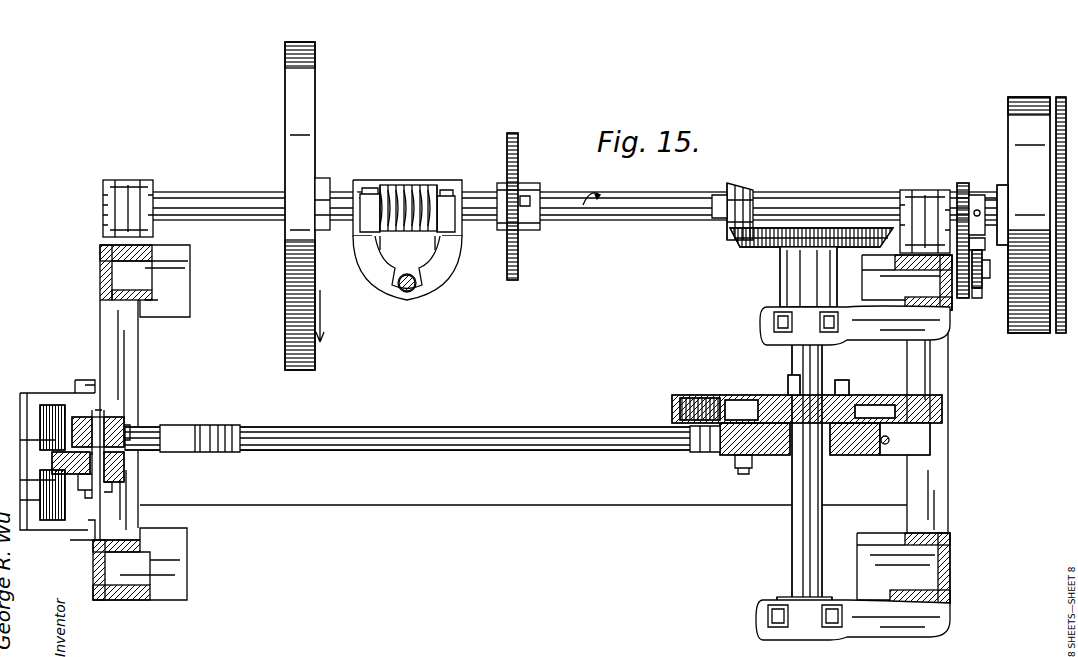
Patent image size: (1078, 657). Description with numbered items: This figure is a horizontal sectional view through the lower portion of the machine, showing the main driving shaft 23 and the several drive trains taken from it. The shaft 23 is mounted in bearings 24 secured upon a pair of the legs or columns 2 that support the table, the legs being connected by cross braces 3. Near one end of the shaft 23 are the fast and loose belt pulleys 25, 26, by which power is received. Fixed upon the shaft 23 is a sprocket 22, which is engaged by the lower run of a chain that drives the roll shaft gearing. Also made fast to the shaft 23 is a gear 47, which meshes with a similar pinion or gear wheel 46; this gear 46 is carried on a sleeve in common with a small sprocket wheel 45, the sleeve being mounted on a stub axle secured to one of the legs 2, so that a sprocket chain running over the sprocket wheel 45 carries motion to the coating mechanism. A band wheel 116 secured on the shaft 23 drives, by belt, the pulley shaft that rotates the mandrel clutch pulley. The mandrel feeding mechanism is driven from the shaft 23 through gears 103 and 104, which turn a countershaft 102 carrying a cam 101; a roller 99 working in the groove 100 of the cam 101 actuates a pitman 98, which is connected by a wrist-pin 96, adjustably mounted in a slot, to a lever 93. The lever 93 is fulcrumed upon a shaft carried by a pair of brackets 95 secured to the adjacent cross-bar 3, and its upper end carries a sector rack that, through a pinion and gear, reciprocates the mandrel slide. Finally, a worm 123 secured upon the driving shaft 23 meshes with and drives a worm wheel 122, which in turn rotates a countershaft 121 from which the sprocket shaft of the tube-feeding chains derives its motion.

The legs or columns 2 is at (98, 266).
The cross braces 3 is at (140, 337).
The sprocket 22 is at (519, 246).
The main driving shaft 23 is at (641, 214).
The bearings 24 is at (138, 182).
The fast belt pulley 25 is at (1020, 123).
The loose belt pulley 26 is at (1064, 128).
The small sprocket wheel 45 is at (982, 292).
The pinion or gear wheel 46 is at (962, 296).
The gear 47 is at (963, 190).
The lever 93 is at (122, 470).
The brackets 95 is at (55, 393).
The wrist-pin 96 is at (116, 416).
The pitman 98 is at (513, 430).
The roller 99 is at (733, 405).
The groove 100 is at (915, 418).
The cam 101 is at (768, 395).
The countershaft 102 is at (818, 477).
The gear 103 is at (757, 244).
The gear 104 is at (753, 195).
The band wheel 116 is at (318, 106).
The countershaft 121 is at (416, 287).
The worm wheel 122 is at (378, 266).
The worm 123 is at (410, 188).